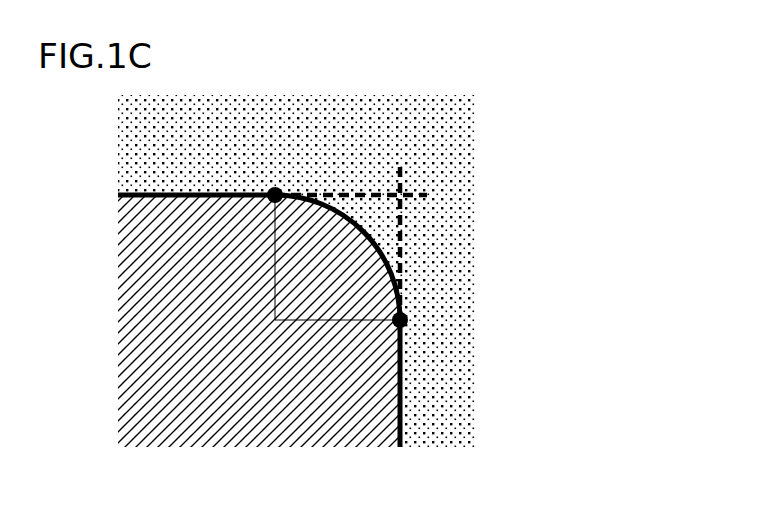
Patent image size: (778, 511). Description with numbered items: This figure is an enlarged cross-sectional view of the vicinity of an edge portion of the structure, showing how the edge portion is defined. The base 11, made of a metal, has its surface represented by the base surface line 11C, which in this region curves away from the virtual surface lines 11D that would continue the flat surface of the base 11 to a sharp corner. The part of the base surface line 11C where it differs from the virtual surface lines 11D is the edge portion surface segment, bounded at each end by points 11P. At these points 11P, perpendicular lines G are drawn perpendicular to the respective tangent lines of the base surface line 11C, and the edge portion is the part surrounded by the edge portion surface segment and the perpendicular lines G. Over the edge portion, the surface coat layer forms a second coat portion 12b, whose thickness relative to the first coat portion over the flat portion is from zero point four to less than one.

The base 11 is at (155, 367).
The base surface line 11C is at (367, 234).
The virtual surface lines 11D is at (345, 193).
The points 11P is at (351, 252).
The second coat portion 12b is at (440, 110).
The perpendicular lines G is at (275, 262).